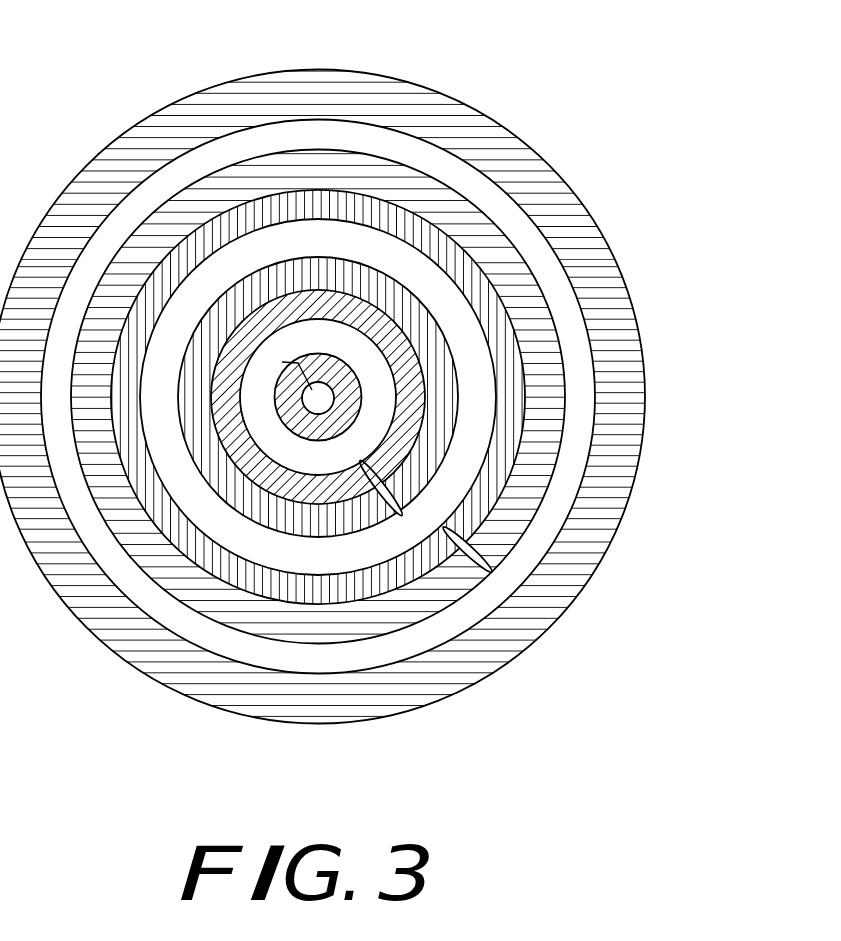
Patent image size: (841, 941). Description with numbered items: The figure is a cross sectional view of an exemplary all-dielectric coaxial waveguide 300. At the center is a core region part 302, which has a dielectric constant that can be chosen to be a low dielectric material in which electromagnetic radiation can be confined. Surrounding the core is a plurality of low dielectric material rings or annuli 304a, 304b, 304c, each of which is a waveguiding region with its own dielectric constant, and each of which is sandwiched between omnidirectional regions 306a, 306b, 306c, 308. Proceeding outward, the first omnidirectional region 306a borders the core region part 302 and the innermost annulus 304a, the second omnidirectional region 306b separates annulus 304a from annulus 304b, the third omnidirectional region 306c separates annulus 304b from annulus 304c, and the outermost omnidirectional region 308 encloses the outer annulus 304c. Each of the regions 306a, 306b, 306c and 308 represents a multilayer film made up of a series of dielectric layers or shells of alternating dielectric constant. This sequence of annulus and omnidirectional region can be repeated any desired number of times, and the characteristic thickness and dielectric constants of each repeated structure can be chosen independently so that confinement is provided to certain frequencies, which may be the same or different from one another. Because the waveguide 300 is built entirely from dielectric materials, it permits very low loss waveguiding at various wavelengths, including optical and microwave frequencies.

The all-dielectric coaxial waveguide 300 is at (137, 60).
The core region part 302 is at (325, 390).
The low dielectric material annulus 304a is at (363, 362).
The low dielectric material annulus 304b is at (467, 337).
The low dielectric material annulus 304c is at (575, 357).
The omnidirectional region 306a is at (302, 428).
The omnidirectional region 306b is at (402, 514).
The omnidirectional region 306c is at (492, 572).
The omnidirectional region 308 is at (600, 515).